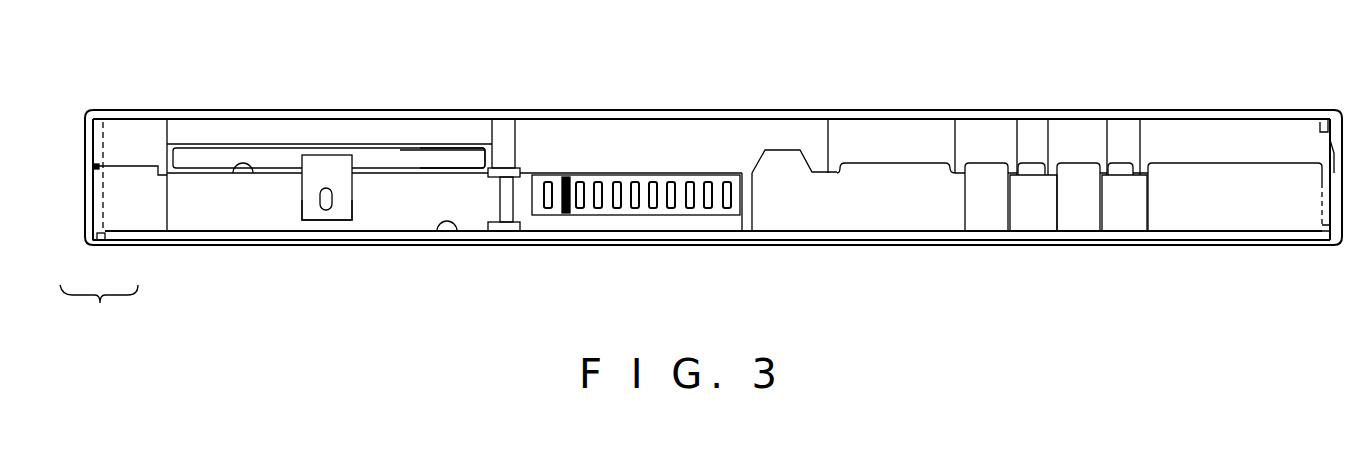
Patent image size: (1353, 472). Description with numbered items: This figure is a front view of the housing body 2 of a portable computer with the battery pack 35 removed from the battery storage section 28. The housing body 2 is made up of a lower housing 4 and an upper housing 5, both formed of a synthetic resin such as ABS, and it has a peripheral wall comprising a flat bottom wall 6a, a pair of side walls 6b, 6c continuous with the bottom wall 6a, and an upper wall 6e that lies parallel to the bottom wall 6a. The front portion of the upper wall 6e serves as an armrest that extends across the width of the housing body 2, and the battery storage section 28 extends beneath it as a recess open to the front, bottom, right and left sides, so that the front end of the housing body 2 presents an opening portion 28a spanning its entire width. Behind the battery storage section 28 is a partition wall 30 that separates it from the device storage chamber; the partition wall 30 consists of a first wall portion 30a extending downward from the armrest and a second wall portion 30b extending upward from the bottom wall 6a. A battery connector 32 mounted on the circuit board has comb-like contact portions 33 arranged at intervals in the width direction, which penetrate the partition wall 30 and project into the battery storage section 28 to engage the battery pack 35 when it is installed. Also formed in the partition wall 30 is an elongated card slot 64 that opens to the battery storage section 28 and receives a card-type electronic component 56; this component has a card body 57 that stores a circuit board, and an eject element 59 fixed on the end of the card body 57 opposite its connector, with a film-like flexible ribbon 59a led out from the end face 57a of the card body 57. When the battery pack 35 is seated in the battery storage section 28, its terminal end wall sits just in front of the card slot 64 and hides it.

The housing body 2 is at (99, 309).
The lower housing 4 is at (93, 247).
The upper housing 5 is at (83, 152).
The bottom wall 6a is at (710, 245).
The side wall 6b is at (84, 114).
The side wall 6c is at (1346, 132).
The upper wall 6e is at (666, 108).
The battery storage section 28 is at (913, 213).
The opening portion 28a is at (447, 230).
The partition wall 30 is at (893, 130).
The first wall portion 30a is at (750, 130).
The second wall portion 30b is at (820, 208).
The battery connector 32 is at (603, 173).
The contact portions 33 is at (671, 208).
The battery pack 35 is at (1321, 181).
The card-type electronic component 56 is at (402, 158).
The card body 57 is at (268, 157).
The end face 57a is at (467, 157).
The eject element 59 is at (330, 167).
The flexible ribbon 59a is at (343, 212).
The card slot 64 is at (245, 165).